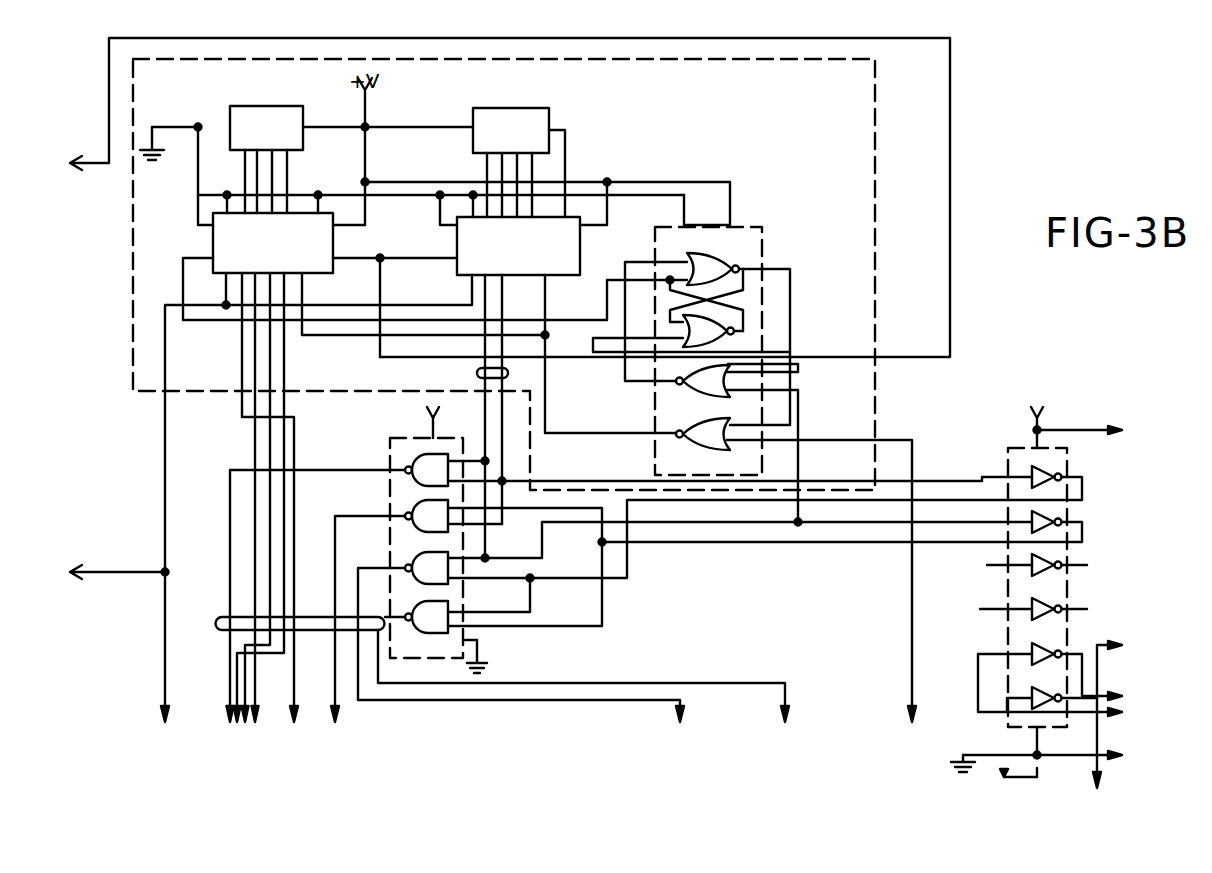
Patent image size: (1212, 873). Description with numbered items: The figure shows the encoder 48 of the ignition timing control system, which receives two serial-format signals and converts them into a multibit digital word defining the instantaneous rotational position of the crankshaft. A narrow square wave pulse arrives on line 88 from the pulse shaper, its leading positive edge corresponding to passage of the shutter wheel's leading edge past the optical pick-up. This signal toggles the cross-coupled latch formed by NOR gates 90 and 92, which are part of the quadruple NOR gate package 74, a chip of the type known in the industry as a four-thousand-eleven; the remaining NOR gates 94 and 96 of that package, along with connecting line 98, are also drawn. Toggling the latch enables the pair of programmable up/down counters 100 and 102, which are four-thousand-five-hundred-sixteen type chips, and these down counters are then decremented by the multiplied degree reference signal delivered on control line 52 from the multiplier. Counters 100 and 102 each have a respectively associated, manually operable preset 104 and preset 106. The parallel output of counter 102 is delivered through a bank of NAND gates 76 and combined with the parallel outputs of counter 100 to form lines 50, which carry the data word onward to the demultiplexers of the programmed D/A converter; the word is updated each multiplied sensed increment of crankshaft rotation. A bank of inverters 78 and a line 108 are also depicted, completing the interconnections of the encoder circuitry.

The encoder 48 is at (875, 148).
The lines 50 is at (216, 628).
The control line 52 is at (165, 532).
The quadruple NOR gate package 74 is at (762, 232).
The bank of NAND gates 76 is at (466, 652).
The inverter block 78 is at (1008, 450).
The line 88 is at (953, 300).
The NOR gate 90 is at (734, 326).
The NOR gate 92 is at (706, 254).
The NOR gate 94 is at (688, 394).
The NOR gate 96 is at (700, 442).
The signal line 98 is at (590, 438).
The programmable up/down counter 100 is at (298, 248).
The programmable up/down counter 102 is at (540, 248).
The preset 104 is at (248, 107).
The preset 106 is at (488, 108).
The signal line 108 is at (476, 375).